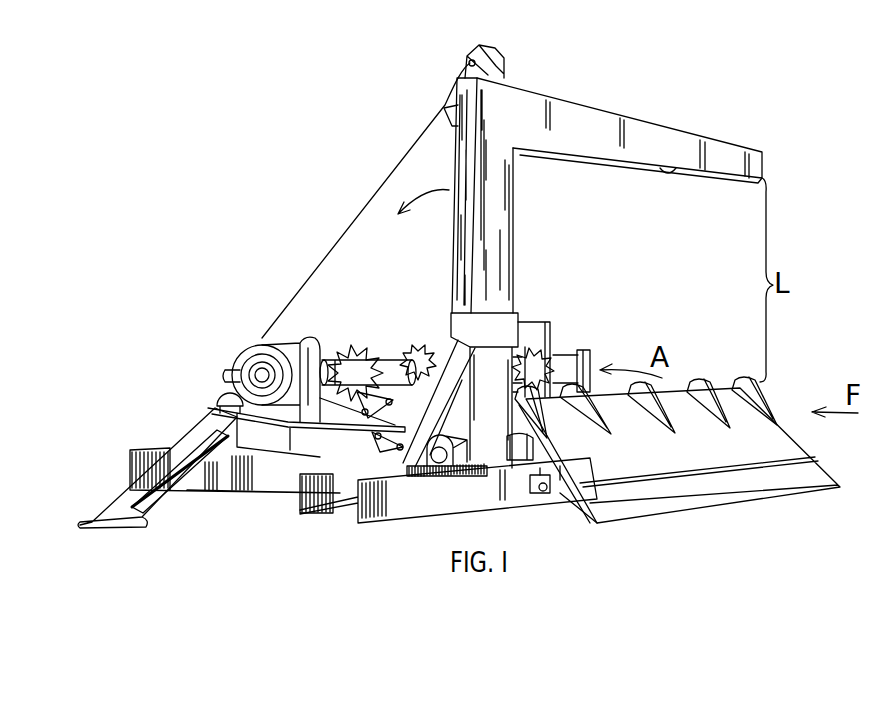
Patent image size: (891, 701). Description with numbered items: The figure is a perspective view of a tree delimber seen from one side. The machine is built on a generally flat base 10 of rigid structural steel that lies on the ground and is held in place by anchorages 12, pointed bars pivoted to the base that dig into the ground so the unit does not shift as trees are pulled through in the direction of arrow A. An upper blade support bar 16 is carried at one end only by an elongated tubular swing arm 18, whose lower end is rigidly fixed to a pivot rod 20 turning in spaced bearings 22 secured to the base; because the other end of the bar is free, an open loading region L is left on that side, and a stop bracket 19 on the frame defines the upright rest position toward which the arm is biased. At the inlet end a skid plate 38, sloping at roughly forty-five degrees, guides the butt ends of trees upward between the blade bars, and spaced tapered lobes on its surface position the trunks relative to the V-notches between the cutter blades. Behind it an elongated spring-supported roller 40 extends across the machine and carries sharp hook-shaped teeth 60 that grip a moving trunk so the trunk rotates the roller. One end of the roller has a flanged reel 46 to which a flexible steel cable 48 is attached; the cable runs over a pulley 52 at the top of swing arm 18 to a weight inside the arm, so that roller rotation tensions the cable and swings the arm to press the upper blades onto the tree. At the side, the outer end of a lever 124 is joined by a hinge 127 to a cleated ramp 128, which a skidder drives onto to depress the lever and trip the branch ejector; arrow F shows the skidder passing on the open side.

The base 10 is at (256, 480).
The anchorages 12 is at (340, 500).
The upper blade support bar 16 is at (627, 118).
The swing arm 18 is at (465, 230).
The stop bracket 19 is at (456, 328).
The pivot rod 20 is at (437, 458).
The bearings 22 is at (457, 437).
The skid plate 38 is at (663, 452).
The roller 40 is at (382, 360).
The flanged reel 46 is at (255, 349).
The cable 48 is at (332, 250).
The pulley 52 is at (456, 42).
The teeth 60 is at (364, 346).
The lever 124 is at (300, 443).
The hinge 127 is at (205, 396).
The ramp 128 is at (121, 494).